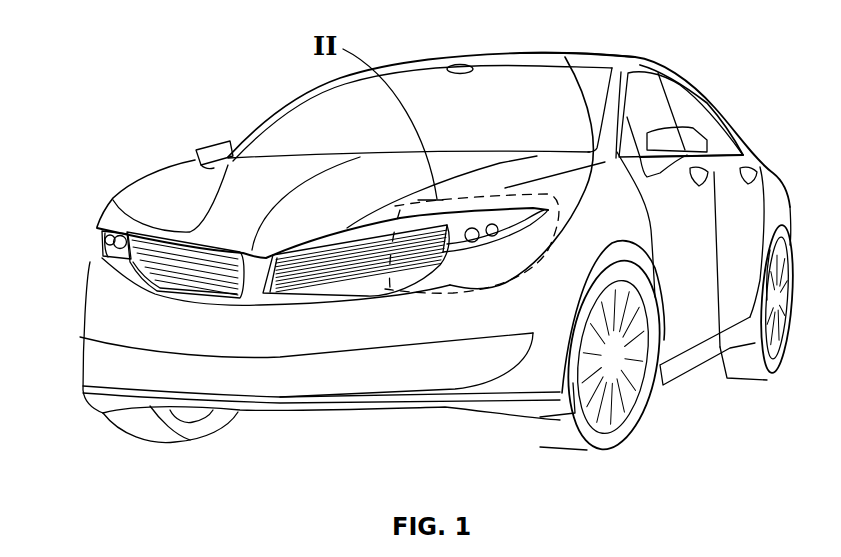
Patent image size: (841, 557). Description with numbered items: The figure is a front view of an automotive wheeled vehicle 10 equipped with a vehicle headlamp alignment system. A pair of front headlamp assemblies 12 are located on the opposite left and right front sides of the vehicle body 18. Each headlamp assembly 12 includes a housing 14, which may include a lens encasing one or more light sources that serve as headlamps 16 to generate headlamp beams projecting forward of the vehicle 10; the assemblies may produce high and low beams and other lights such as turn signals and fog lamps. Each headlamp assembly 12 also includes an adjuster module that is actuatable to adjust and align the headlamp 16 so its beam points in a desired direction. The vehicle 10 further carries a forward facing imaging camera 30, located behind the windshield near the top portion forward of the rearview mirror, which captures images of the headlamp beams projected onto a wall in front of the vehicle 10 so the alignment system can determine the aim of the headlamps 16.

The automotive wheeled vehicle 10 is at (203, 87).
The front headlamp assembly 12 is at (94, 263).
The housing 14 is at (102, 256).
The headlamp 16 is at (120, 236).
The vehicle body 18 is at (566, 56).
The forward facing imaging camera 30 is at (458, 64).